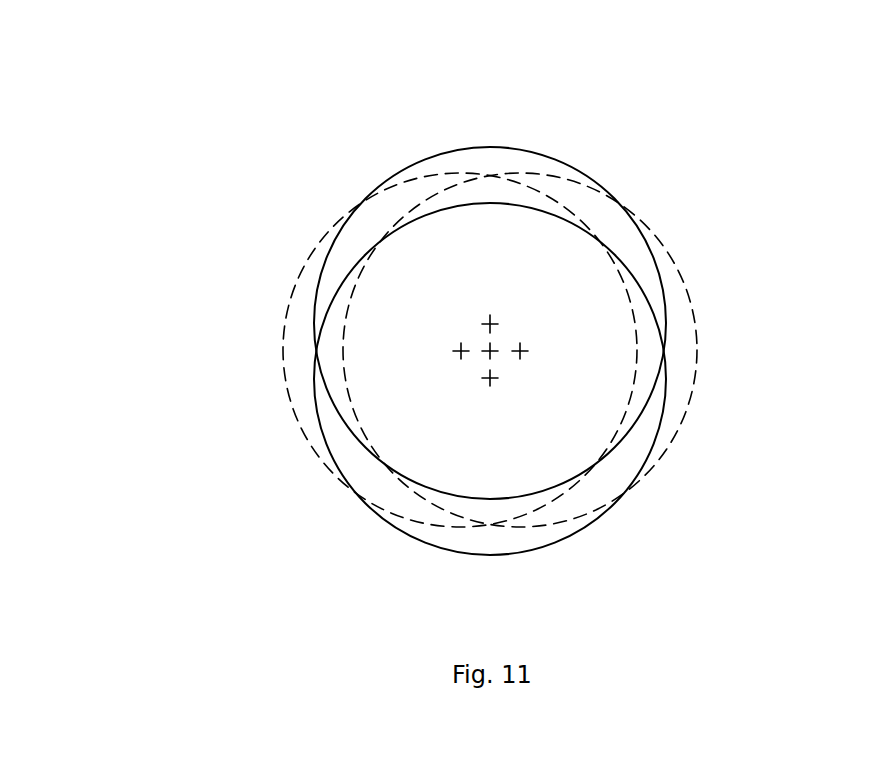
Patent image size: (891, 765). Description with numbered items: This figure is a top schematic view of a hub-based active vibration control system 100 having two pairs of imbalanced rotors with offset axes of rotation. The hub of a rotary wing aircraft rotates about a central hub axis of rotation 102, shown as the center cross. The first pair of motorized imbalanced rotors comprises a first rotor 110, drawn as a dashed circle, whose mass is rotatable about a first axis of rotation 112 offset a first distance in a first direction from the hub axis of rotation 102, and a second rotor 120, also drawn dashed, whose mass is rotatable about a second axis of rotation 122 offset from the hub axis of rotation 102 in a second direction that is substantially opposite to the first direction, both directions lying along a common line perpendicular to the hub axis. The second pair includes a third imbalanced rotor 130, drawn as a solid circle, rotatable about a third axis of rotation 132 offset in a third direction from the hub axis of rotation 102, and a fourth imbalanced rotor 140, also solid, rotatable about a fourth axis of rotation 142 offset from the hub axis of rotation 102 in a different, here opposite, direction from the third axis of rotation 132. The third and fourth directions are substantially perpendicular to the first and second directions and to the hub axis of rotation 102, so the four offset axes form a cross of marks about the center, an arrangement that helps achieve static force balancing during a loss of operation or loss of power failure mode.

The active vibration control system 100 is at (238, 134).
The hub axis of rotation 102 is at (491, 351).
The first rotor 110 is at (700, 327).
The first axis of rotation 112 is at (523, 352).
The second rotor 120 is at (283, 360).
The second axis of rotation 122 is at (458, 352).
The third imbalanced rotor 130 is at (504, 148).
The third axis of rotation 132 is at (491, 323).
The fourth imbalanced rotor 140 is at (518, 553).
The fourth axis of rotation 142 is at (491, 379).